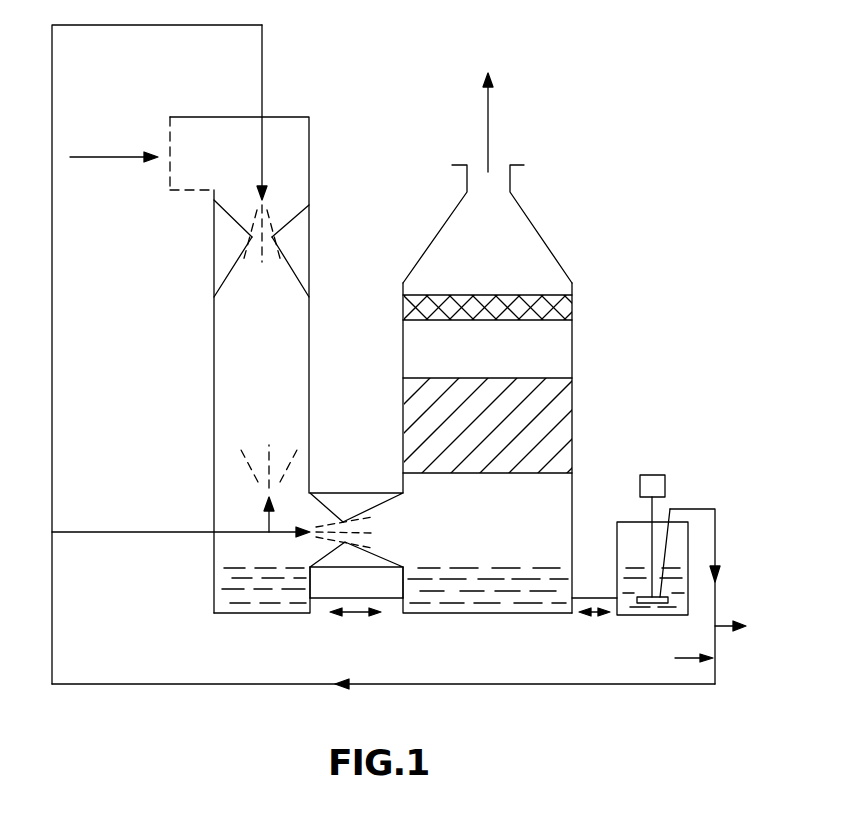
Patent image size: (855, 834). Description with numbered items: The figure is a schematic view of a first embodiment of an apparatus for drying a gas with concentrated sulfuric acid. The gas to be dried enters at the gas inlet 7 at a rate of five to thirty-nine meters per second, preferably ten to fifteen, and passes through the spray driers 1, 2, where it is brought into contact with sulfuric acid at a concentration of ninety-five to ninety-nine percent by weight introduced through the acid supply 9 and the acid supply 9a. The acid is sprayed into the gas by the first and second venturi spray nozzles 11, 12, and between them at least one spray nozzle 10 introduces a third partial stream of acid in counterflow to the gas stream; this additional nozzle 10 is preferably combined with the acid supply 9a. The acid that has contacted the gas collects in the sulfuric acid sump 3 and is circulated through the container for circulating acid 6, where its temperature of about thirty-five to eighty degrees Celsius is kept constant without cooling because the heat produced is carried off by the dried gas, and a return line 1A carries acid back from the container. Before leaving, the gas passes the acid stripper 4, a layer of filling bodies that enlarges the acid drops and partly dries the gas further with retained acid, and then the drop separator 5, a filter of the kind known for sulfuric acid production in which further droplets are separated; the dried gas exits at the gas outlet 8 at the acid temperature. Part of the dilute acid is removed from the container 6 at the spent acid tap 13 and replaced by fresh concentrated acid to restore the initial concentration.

The spray drier 1 is at (302, 353).
The return line 1A is at (383, 667).
The spray drier 2 is at (425, 520).
The sulfuric acid sump 3 is at (272, 610).
The acid stripper 4 is at (556, 431).
The drop separator 5 is at (574, 304).
The container for circulating acid 6 is at (668, 612).
The gas inlet 7 is at (112, 160).
The gas outlet 8 is at (491, 131).
The acid supply 9 is at (265, 70).
The acid supply 9a is at (110, 536).
The spray nozzle 10 is at (266, 516).
The venturi spray nozzle 11 is at (290, 228).
The venturi spray nozzle 12 is at (375, 548).
The spent acid tap 13 is at (723, 596).